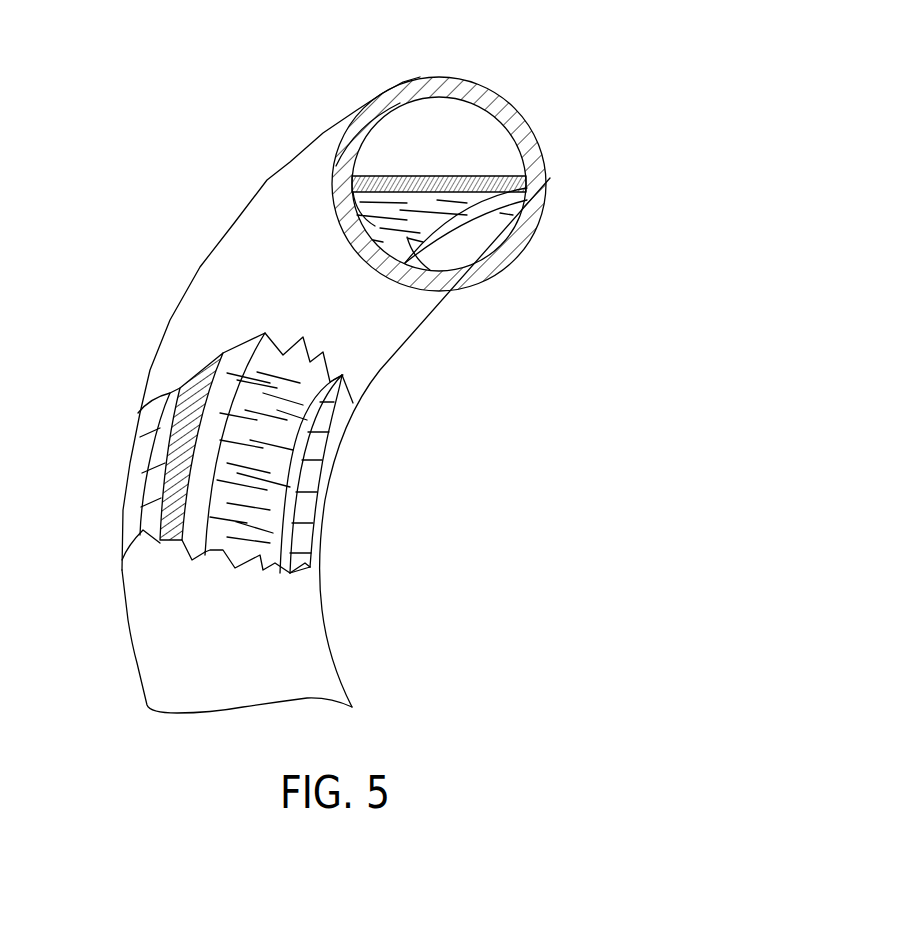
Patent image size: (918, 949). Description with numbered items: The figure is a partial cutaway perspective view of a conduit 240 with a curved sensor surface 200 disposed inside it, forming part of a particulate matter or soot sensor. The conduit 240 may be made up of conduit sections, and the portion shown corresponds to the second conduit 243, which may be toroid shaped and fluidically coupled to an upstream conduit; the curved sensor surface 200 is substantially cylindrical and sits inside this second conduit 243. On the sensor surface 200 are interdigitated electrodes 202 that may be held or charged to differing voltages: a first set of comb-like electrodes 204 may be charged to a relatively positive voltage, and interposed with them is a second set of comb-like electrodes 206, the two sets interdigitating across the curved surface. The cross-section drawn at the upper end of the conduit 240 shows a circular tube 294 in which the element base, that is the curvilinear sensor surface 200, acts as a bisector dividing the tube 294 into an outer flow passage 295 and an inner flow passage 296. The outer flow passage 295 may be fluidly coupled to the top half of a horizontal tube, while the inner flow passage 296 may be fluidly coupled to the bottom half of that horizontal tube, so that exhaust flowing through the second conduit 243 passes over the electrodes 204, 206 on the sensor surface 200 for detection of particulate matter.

The sensor surface 200 is at (490, 240).
The interdigitated electrodes 202 is at (263, 420).
The first set of comb-like electrodes 204 is at (422, 258).
The second set of comb-like electrodes 206 is at (362, 236).
The conduit 240 is at (213, 280).
The second conduit 243 is at (158, 685).
The circular tube 294 is at (275, 181).
The outer flow passage 295 is at (478, 125).
The inner flow passage 296 is at (502, 218).